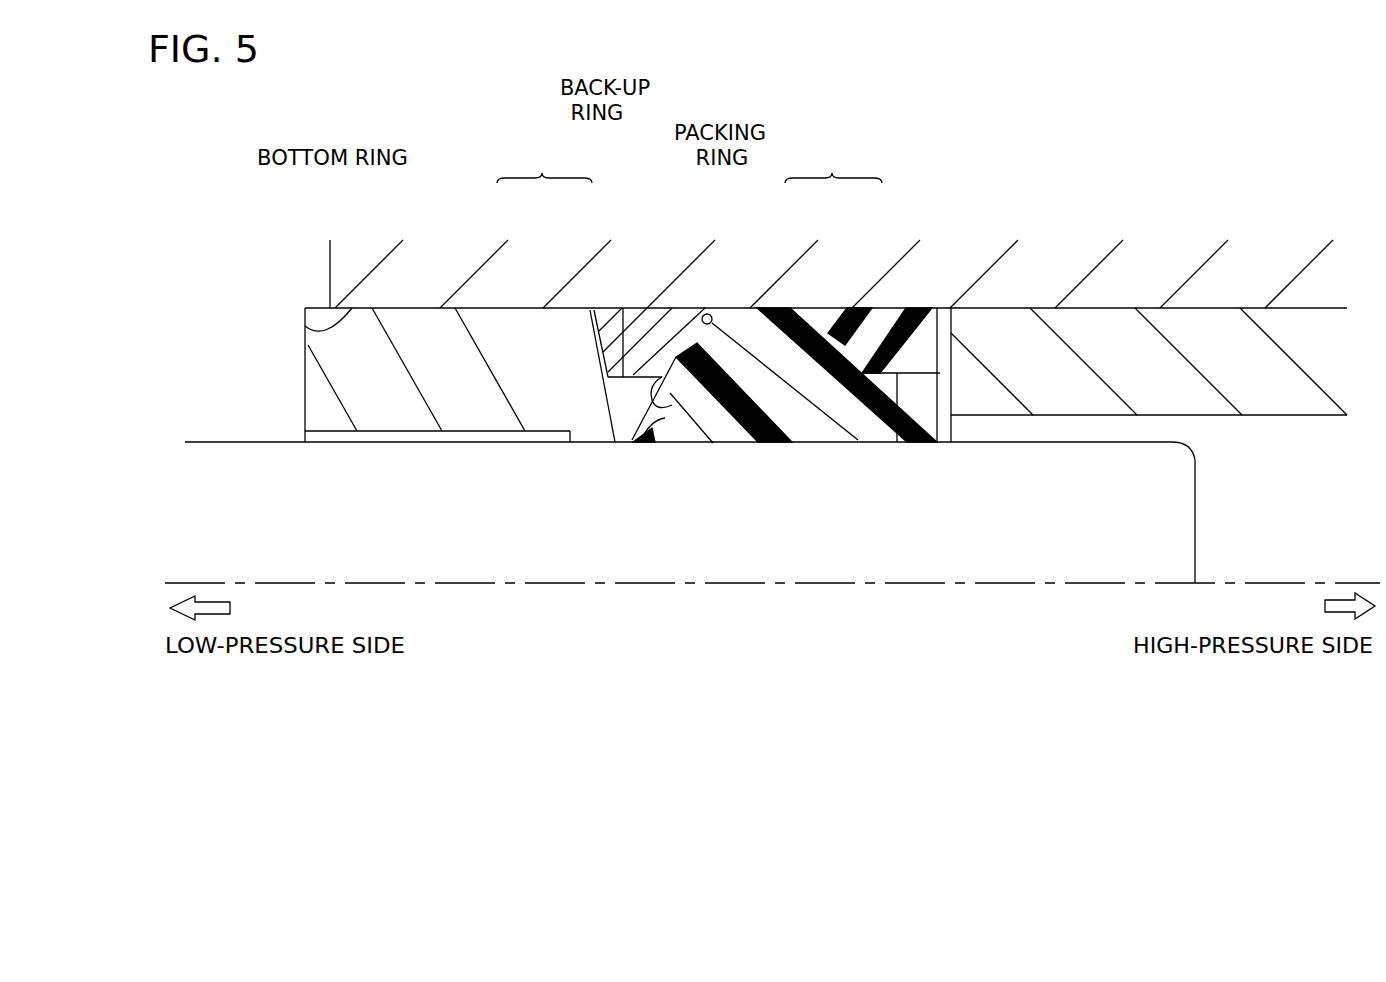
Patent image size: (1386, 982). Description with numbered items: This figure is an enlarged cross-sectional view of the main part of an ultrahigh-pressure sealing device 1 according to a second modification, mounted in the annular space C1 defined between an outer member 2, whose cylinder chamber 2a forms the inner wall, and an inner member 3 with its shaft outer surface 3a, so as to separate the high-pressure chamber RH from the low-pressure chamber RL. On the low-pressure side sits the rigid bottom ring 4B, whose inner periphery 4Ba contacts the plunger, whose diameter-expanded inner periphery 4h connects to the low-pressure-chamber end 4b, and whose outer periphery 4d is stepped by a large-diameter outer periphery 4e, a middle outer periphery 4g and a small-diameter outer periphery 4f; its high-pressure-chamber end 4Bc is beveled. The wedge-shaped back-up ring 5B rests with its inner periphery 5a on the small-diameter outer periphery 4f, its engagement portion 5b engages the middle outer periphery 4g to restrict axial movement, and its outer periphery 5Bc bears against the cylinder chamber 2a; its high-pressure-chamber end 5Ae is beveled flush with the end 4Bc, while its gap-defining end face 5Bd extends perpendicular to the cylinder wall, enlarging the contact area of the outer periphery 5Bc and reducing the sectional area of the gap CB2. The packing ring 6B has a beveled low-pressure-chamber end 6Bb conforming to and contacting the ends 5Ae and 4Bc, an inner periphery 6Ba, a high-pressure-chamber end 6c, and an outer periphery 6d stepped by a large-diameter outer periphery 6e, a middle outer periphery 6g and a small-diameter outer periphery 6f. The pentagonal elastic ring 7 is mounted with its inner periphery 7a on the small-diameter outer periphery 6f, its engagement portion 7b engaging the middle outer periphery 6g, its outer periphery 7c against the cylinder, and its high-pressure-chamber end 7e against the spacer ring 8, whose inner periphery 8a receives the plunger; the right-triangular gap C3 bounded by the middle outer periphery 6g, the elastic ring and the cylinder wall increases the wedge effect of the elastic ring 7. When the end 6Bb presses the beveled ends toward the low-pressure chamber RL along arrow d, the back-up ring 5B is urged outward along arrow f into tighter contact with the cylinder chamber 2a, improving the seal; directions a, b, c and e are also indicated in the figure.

The ultrahigh-pressure sealing device 1 is at (1140, 172).
The outer member 2 is at (327, 262).
The cylinder chamber 2a is at (305, 330).
The inner member 3 is at (1197, 493).
The shaft outer surface 3a is at (205, 440).
The bottom ring 4B is at (393, 303).
The low-pressure-chamber end 4b is at (305, 363).
The diameter-expanded inner periphery 4h is at (463, 447).
The inner periphery 4Ba is at (577, 447).
The high-pressure-chamber end 4Bc is at (660, 447).
The outer periphery 4d is at (544, 166).
The large-diameter outer periphery 4e is at (485, 305).
The middle outer periphery 4g is at (583, 305).
The small-diameter outer periphery 4f is at (603, 305).
The back-up ring 5B is at (637, 300).
The outer periphery 5Bc is at (675, 303).
The gap-defining end face 5Bd is at (565, 352).
The engagement portion 5b is at (600, 360).
The inner periphery 5a is at (623, 380).
The high-pressure-chamber end 5Ae is at (710, 303).
The packing ring 6B is at (745, 303).
The inner periphery 6Ba is at (740, 447).
The low-pressure-chamber end 6Bb is at (668, 395).
The high-pressure-chamber end 6c is at (953, 447).
The outer periphery 6d is at (833, 166).
The large-diameter outer periphery 6e is at (775, 303).
The middle outer periphery 6g is at (805, 303).
The small-diameter outer periphery 6f is at (885, 303).
The elastic ring 7 is at (930, 303).
The inner periphery 7a is at (900, 447).
The engagement portion 7b is at (860, 447).
The outer periphery 7c is at (942, 303).
The high-pressure-chamber end 7e is at (955, 337).
The spacer ring 8 is at (1277, 420).
The inner periphery 8a is at (950, 392).
The annular space C1 is at (1063, 415).
The gap C3 is at (822, 306).
The gap CB2 is at (545, 327).
The low-pressure chamber RL is at (237, 390).
The high-pressure chamber RH is at (1248, 545).
The direction a is at (968, 363).
The direction b is at (807, 428).
The direction c is at (893, 308).
The arrow d is at (775, 345).
The direction e is at (600, 430).
The arrow f is at (648, 308).